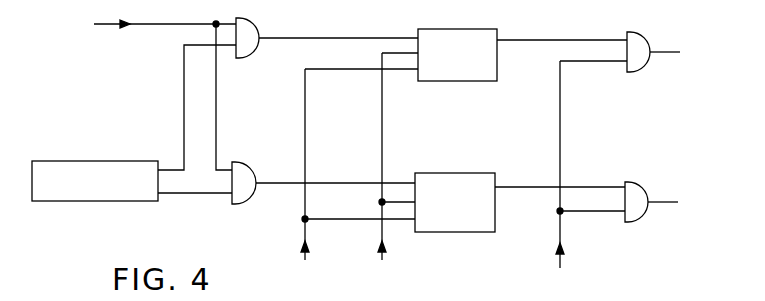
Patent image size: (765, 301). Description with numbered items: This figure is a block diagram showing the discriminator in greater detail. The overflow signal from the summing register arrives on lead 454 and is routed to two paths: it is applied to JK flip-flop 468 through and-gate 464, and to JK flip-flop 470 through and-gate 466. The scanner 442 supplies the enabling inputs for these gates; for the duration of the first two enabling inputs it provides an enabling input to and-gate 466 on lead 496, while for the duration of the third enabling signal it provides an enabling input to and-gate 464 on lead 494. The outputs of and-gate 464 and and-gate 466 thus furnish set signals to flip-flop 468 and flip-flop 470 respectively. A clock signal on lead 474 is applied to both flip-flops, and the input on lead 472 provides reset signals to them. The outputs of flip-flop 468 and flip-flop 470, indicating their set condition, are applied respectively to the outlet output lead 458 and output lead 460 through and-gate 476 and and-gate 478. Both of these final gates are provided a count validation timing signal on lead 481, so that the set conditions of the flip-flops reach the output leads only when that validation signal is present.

The scanner 442 is at (125, 161).
The lead 454 is at (108, 24).
The output lead 458 is at (665, 52).
The output lead 460 is at (658, 202).
The and-gate 464 is at (246, 58).
The and-gate 466 is at (248, 162).
The JK flip-flop 468 is at (497, 55).
The JK flip-flop 470 is at (485, 173).
The lead 472 is at (305, 228).
The lead 474 is at (380, 230).
The and-gate 476 is at (636, 72).
The and-gate 478 is at (632, 182).
The lead 481 is at (561, 242).
The lead 494 is at (184, 108).
The lead 496 is at (191, 194).